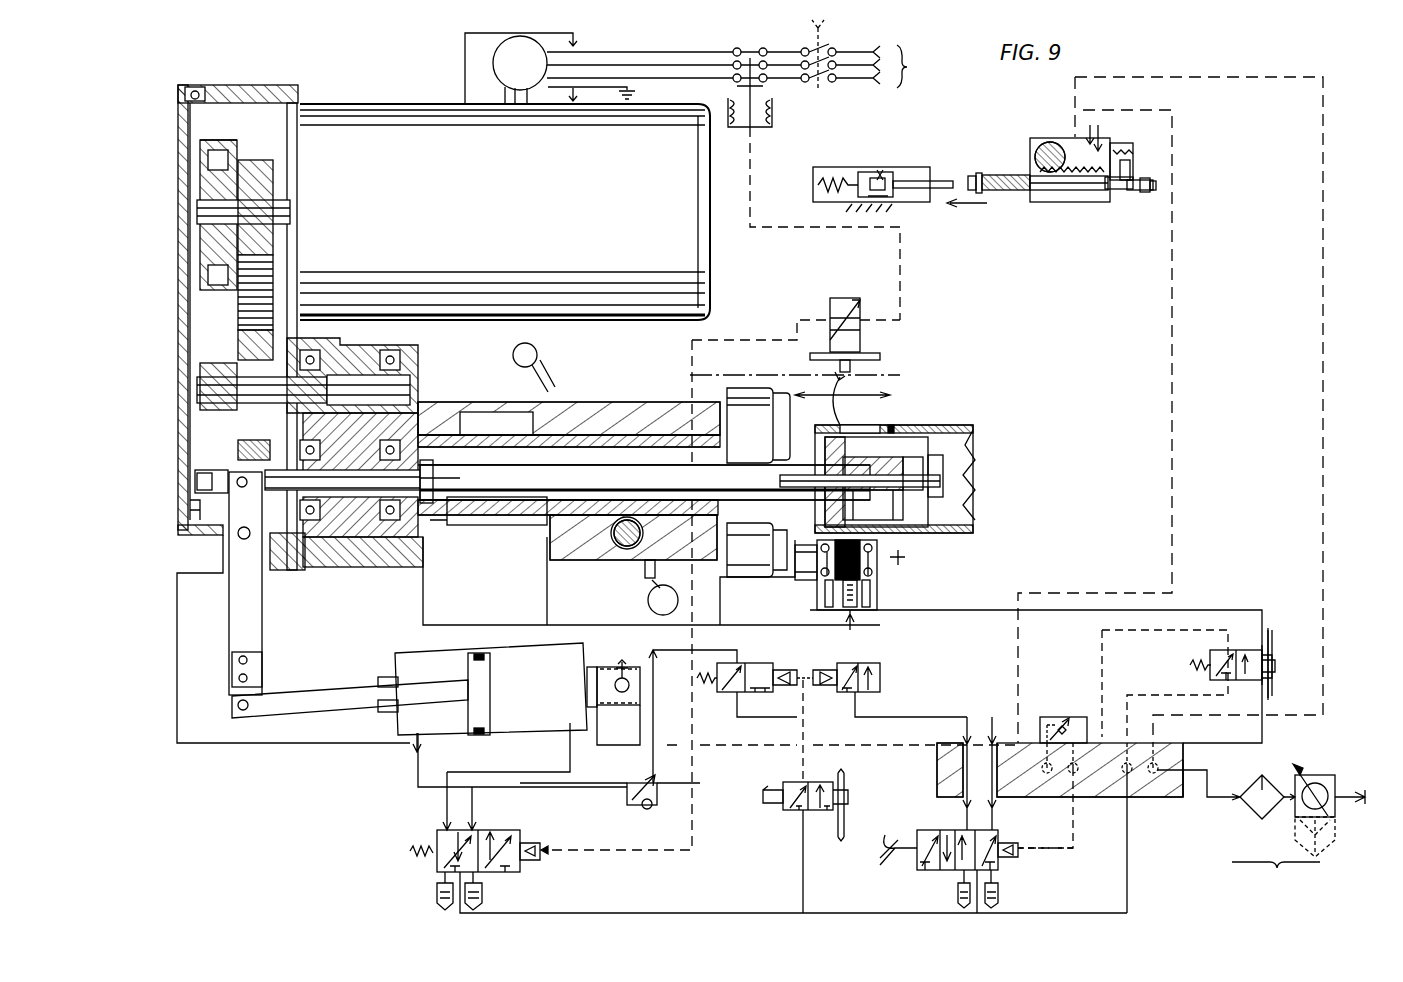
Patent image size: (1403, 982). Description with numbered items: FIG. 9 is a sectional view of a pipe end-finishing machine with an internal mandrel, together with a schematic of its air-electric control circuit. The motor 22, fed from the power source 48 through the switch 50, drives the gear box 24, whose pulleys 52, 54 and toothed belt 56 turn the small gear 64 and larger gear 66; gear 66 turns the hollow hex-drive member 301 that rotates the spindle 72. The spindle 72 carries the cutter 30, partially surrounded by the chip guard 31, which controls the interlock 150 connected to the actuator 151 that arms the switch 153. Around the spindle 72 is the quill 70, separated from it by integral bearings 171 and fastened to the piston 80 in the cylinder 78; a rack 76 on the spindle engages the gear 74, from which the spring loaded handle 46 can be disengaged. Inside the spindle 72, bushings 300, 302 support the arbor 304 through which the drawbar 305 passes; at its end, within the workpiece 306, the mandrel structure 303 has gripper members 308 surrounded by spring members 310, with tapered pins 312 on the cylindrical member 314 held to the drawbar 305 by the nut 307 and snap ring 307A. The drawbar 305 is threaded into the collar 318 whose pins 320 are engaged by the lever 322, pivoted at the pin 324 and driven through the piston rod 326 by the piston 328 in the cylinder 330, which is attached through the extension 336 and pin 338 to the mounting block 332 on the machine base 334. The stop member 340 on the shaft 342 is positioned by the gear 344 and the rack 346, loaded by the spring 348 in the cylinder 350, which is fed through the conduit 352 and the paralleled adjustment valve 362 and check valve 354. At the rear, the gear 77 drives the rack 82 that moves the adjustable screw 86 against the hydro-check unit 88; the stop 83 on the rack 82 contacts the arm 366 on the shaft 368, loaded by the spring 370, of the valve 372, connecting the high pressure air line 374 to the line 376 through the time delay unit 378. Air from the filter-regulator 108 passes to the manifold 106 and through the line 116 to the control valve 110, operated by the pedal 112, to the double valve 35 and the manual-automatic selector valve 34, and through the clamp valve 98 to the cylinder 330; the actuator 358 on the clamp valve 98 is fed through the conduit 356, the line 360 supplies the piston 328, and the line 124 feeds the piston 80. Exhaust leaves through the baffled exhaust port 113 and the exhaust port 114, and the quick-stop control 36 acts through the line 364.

The electric motor 22 is at (480, 197).
The gear box 24 is at (300, 93).
The cutter 30 is at (752, 434).
The chip guard 31 is at (772, 355).
The manual-automatic selector valve 34 is at (785, 808).
The double valve 35 is at (745, 663).
The quick-stop control 36 is at (1250, 650).
The spring loaded handle 46 is at (538, 353).
The three-phase power source 48 is at (910, 67).
The switch 50 is at (838, 47).
The double step gear belt pulley 52 is at (238, 150).
The driven pulley 54 is at (290, 335).
The toothed belt 56 is at (273, 270).
The small gear 64 is at (380, 380).
The larger gear 66 is at (360, 560).
The quill 70 is at (660, 450).
The spindle 72 is at (620, 450).
The gear 74 is at (627, 548).
The rack 76 is at (590, 522).
The gear 77 is at (1040, 158).
The cylinder 78 is at (651, 561).
The piston 80 is at (470, 560).
The rack 82 is at (1022, 195).
The stop 83 is at (1155, 190).
The adjustable screw 86 is at (968, 180).
The hydro-check feed and rapid travel adjustment mechanism 88 is at (856, 166).
The clamp valve 98 is at (495, 830).
The manifold 106 is at (1183, 800).
The filter-regulator 108 is at (1298, 833).
The control valve 110 is at (1000, 867).
The pedal 112 is at (908, 840).
The baffled exhaust port 113 is at (482, 895).
The exhaust port 114 is at (956, 898).
The line 116 is at (1130, 876).
The line 124 is at (520, 610).
The interlock 150 is at (860, 326).
The actuator 151 is at (773, 106).
The switch 153 is at (740, 55).
The integral bearings 171 is at (550, 445).
The bushing 300 is at (600, 440).
The hollow hex-drive member 301 is at (458, 470).
The bushing 302 is at (715, 480).
The mandrel structure 303 is at (940, 530).
The arbor 304 is at (645, 481).
The drawbar 305 is at (345, 560).
The workpiece 306 is at (960, 425).
The nut 307 is at (940, 480).
The snap ring 307A is at (923, 475).
The gripper members 308 is at (928, 450).
The coil spring or rubber band members 310 is at (890, 440).
The tapered pins 312 is at (930, 445).
The cylindrical member 314 is at (930, 505).
The collar 318 is at (205, 515).
The cylindrical pins 320 is at (215, 470).
The lever 322 is at (262, 640).
The pin 324 is at (248, 540).
The piston rod 326 is at (272, 718).
The piston 328 is at (492, 712).
The cylinder 330 is at (410, 752).
The mounting block 332 is at (614, 725).
The machine base 334 is at (302, 755).
The extension 336 is at (590, 682).
The pin 338 is at (618, 671).
The stop member 340 is at (447, 790).
The short shaft 342 is at (877, 570).
The gear 344 is at (880, 545).
The rack 346 is at (858, 600).
The spring 348 is at (870, 590).
The cylinder 350 is at (830, 590).
The conduit 352 is at (860, 620).
The check valve 354 is at (642, 808).
The conduit 356 is at (900, 760).
The actuator 358 is at (530, 862).
The line 360 is at (410, 780).
The adjustment valve 362 is at (680, 783).
The line 364 is at (1102, 668).
The arm 366 is at (1135, 170).
The shaft 368 is at (1128, 143).
The spring 370 is at (1133, 155).
The valve 372 is at (1080, 140).
The high pressure air line 374 is at (1325, 88).
The line 376 is at (1175, 135).
The time delay unit 378 is at (1060, 717).